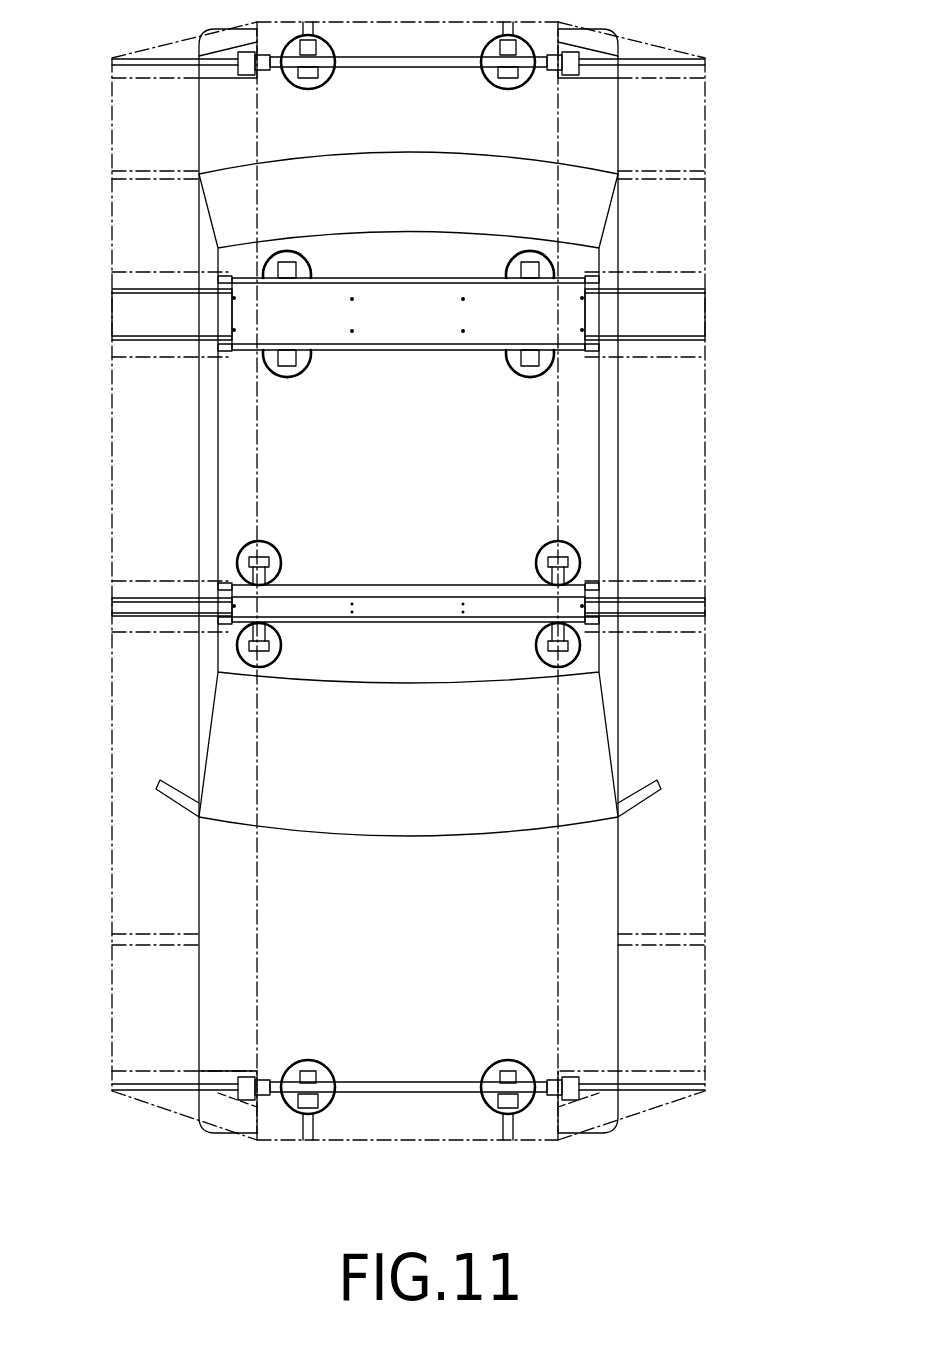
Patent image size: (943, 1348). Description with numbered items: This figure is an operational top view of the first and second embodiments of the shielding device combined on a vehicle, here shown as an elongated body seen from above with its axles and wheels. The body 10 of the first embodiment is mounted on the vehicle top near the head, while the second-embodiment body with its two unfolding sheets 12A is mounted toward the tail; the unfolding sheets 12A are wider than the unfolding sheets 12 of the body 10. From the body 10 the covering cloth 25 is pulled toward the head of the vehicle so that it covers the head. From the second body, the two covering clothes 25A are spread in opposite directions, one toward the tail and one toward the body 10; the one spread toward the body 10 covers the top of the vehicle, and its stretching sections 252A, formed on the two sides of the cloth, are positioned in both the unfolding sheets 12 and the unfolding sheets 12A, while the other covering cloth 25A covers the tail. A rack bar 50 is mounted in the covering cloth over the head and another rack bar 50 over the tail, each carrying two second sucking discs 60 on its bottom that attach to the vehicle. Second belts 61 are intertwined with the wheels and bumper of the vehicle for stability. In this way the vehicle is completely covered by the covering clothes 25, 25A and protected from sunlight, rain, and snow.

The body 10 is at (552, 311).
The unfolding sheets 12 is at (150, 608).
The unfolding sheets 12A is at (140, 323).
The covering cloth 25 is at (548, 878).
The covering cloth 25A is at (560, 225).
The stretching sections 252A is at (706, 120).
The rack bar 50 is at (447, 1086).
The second sucking discs 60 is at (293, 1098).
The second belts 61 is at (513, 1127).